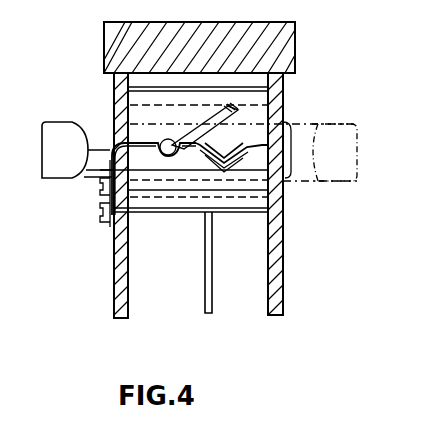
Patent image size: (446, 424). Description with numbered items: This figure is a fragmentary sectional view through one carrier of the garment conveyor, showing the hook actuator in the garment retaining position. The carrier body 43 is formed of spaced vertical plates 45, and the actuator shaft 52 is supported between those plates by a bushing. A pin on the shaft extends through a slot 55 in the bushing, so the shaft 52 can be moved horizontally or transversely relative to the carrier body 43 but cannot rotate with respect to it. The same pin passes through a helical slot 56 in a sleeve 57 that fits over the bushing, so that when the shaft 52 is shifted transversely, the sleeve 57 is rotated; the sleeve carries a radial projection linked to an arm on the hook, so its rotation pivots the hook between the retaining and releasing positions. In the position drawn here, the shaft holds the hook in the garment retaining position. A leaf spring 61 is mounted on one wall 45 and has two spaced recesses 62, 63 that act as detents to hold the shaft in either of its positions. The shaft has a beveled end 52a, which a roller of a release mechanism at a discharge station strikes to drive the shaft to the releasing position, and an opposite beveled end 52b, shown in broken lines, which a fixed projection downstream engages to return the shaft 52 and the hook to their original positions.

The carrier body 43 is at (298, 50).
The vertical plates 45 is at (115, 278).
The shaft 52 is at (82, 123).
The beveled end 52a is at (45, 160).
The opposite beveled end 52b is at (355, 135).
The slot 55 is at (228, 148).
The helical slot 56 is at (232, 110).
The sleeve 57 is at (240, 205).
The leaf spring 61 is at (190, 155).
The recess 62 is at (170, 162).
The recess 63 is at (230, 155).